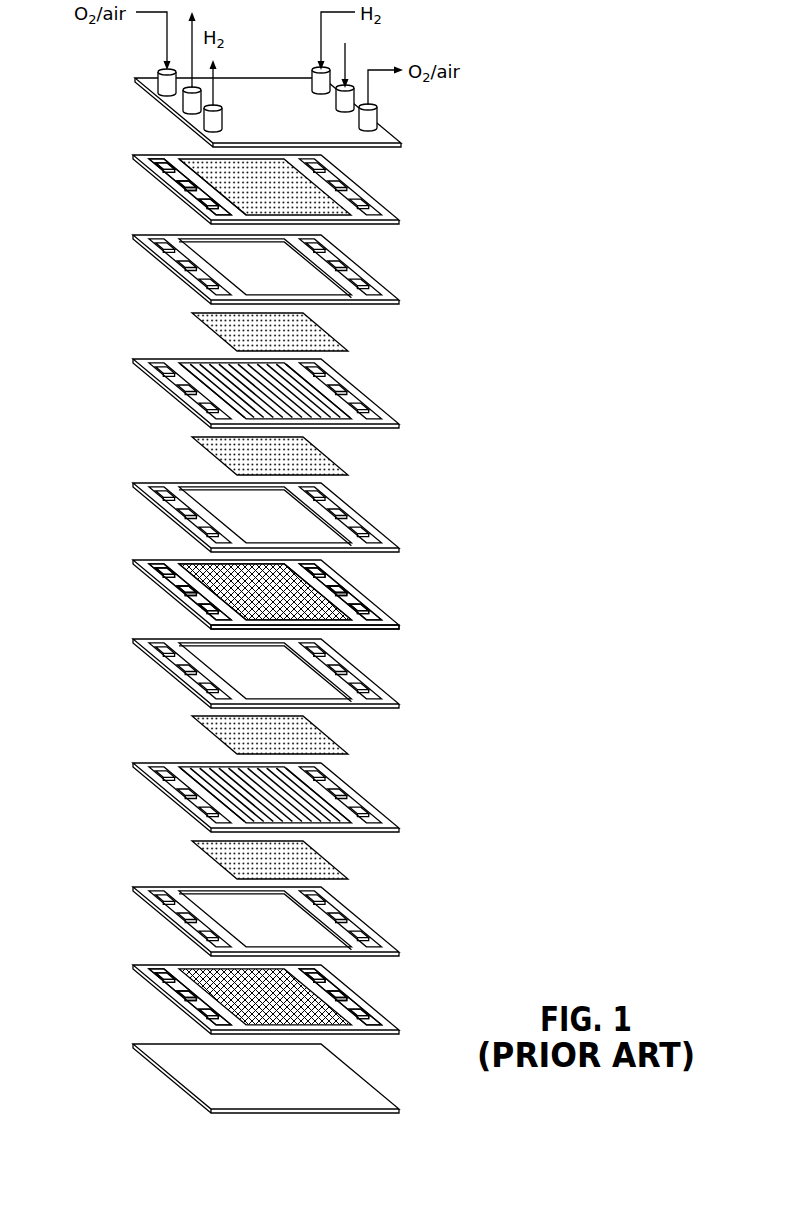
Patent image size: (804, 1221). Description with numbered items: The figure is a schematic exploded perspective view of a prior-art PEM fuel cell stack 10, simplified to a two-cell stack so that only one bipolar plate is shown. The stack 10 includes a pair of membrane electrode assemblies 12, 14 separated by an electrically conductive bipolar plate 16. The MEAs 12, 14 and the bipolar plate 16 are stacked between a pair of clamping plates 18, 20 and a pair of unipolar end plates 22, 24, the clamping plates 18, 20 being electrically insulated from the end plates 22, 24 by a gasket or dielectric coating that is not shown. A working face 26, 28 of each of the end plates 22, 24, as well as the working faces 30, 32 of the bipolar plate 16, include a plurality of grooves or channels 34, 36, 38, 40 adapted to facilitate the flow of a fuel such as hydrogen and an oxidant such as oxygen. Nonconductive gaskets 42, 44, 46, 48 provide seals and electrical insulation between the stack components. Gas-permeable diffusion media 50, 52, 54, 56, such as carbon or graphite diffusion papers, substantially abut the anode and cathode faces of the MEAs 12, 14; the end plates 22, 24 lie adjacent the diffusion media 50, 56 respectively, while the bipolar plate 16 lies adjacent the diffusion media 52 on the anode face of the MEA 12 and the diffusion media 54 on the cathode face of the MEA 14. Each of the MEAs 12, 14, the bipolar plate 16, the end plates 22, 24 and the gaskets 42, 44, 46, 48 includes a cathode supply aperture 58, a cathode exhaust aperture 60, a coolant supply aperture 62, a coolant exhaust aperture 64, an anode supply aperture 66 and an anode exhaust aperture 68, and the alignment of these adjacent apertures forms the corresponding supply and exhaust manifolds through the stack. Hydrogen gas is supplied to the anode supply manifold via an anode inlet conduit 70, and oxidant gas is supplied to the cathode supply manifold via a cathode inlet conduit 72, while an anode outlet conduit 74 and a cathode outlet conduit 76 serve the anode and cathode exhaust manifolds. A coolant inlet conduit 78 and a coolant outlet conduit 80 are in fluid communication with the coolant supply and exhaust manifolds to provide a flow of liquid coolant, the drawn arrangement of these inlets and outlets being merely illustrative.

The PEM fuel cell stack 10 is at (503, 350).
The membrane electrode assembly 12 is at (152, 393).
The membrane electrode assembly 14 is at (370, 785).
The bipolar plate 16 is at (140, 580).
The clamping plate 18 is at (150, 110).
The clamping plate 20 is at (379, 1083).
The unipolar end plate 22 is at (152, 189).
The unipolar end plate 24 is at (354, 980).
The working face 26 is at (335, 220).
The working face 28 is at (192, 968).
The working face 30 is at (325, 618).
The working face 32 is at (235, 633).
The grooves or channels 34 is at (183, 190).
The grooves or channels 36 is at (335, 573).
The grooves or channels 38 is at (205, 622).
The grooves or channels 40 is at (373, 1003).
The nonconductive gasket 42 is at (175, 242).
The nonconductive gasket 44 is at (162, 515).
The nonconductive gasket 46 is at (350, 688).
The nonconductive gasket 48 is at (345, 915).
The gas-permeable diffusion media 50 is at (215, 333).
The gas-permeable diffusion media 52 is at (215, 458).
The gas-permeable diffusion media 54 is at (320, 728).
The gas-permeable diffusion media 56 is at (320, 855).
The cathode supply aperture 58 is at (157, 568).
The cathode exhaust aperture 60 is at (360, 610).
The coolant supply aperture 62 is at (330, 608).
The coolant exhaust aperture 64 is at (180, 598).
The anode supply aperture 66 is at (337, 562).
The anode exhaust aperture 68 is at (205, 618).
The anode inlet conduit 70 is at (315, 80).
The cathode inlet conduit 72 is at (165, 82).
The anode outlet conduit 74 is at (210, 120).
The cathode outlet conduit 76 is at (370, 122).
The coolant inlet conduit 78 is at (352, 95).
The coolant outlet conduit 80 is at (190, 100).